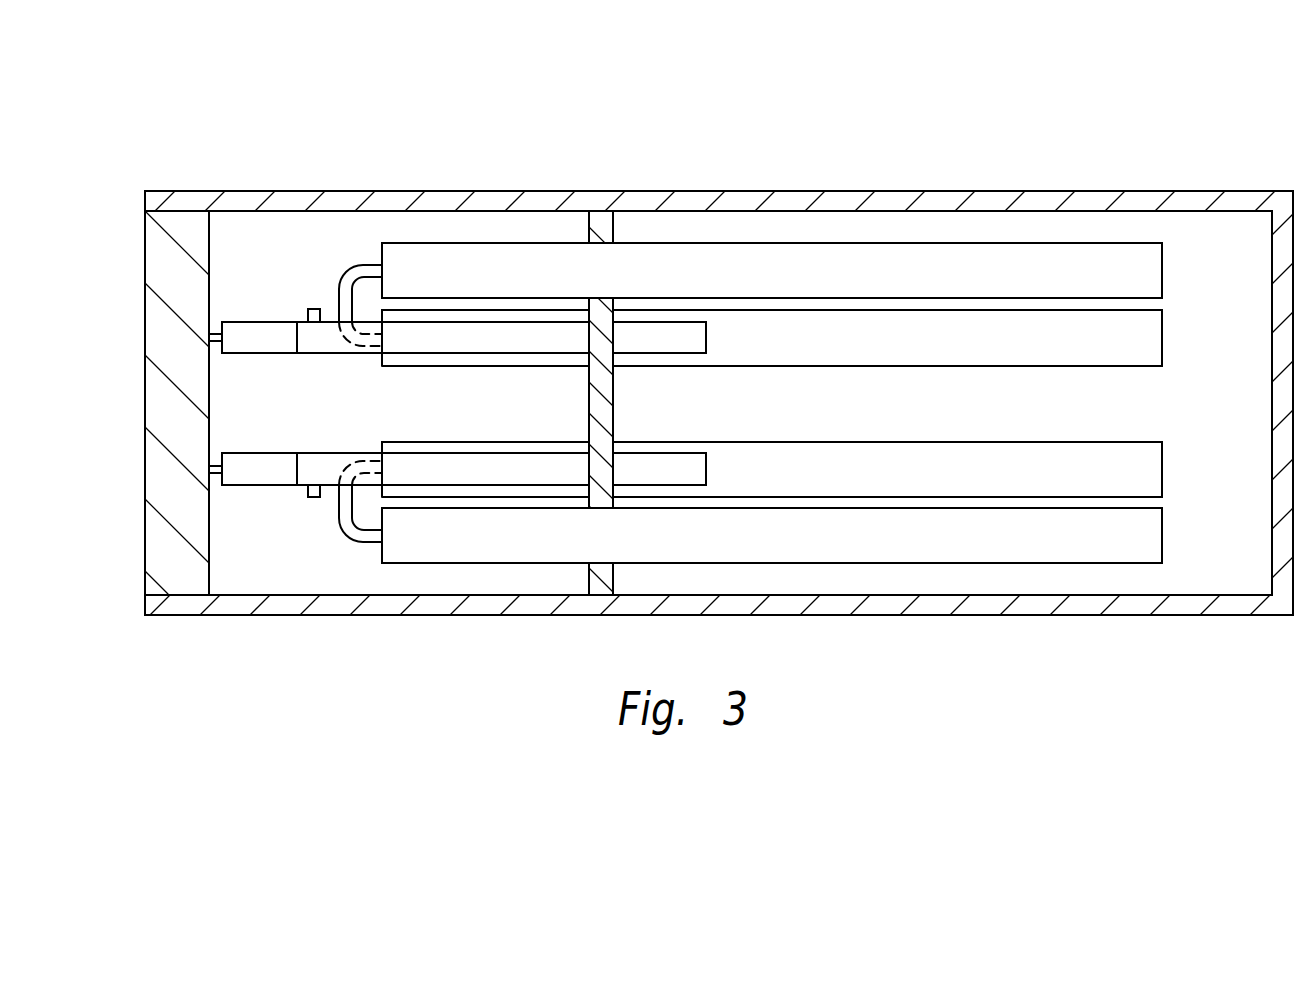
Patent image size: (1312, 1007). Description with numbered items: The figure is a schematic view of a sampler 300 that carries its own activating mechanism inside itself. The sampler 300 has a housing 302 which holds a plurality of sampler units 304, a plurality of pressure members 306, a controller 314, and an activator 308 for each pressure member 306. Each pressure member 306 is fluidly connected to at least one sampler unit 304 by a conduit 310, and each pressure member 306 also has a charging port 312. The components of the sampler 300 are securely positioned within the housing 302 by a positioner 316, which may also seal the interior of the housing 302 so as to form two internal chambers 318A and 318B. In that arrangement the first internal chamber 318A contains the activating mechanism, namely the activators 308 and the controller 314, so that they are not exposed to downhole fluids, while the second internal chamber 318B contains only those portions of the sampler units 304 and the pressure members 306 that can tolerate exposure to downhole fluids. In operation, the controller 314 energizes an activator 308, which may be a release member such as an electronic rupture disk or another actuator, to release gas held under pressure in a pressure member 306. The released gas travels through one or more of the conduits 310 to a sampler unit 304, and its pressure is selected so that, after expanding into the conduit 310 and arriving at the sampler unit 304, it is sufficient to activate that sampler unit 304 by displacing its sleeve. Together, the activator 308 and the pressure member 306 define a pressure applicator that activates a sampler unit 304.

The sampler 300 is at (1212, 55).
The housing 302 is at (747, 192).
The sampler unit 304 is at (1162, 270).
The pressure member 306 is at (706, 337).
The activator 308 is at (247, 353).
The conduit 310 is at (356, 270).
The charging port 312 is at (312, 308).
The controller 314 is at (145, 402).
The positioner 316 is at (613, 398).
The first internal chamber 318A is at (256, 227).
The second internal chamber 318B is at (941, 232).